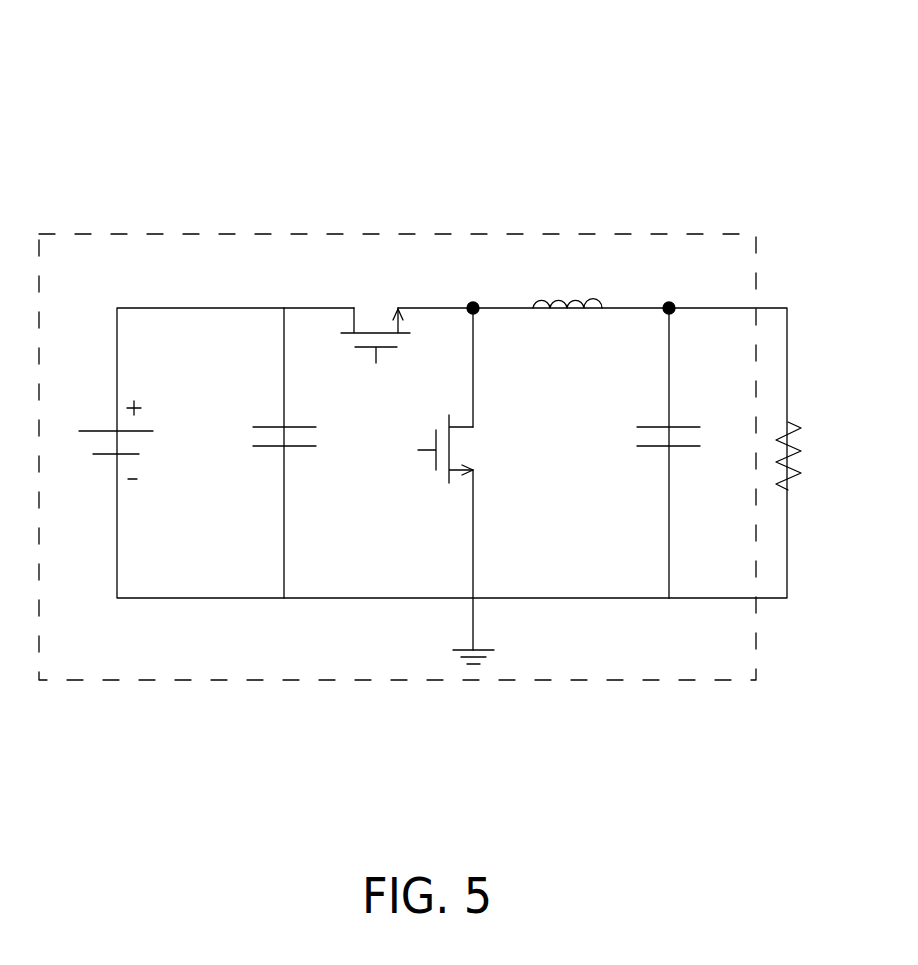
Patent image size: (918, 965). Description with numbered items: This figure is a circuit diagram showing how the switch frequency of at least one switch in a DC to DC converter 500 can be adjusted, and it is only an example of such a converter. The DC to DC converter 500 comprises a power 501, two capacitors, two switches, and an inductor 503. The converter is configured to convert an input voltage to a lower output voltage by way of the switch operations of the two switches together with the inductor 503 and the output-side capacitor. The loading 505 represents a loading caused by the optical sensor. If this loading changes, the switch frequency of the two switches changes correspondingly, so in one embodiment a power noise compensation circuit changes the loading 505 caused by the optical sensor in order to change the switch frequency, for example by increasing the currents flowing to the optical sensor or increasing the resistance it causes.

The DC to DC converter 500 is at (680, 103).
The power 501 is at (488, 234).
The inductor 503 is at (570, 297).
The loading 505 is at (803, 458).